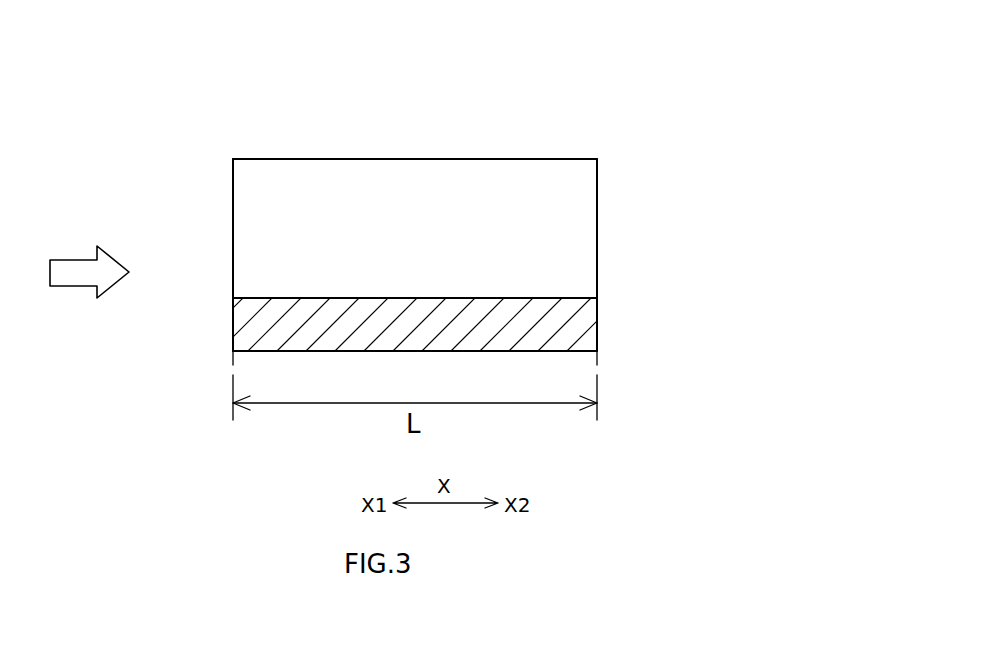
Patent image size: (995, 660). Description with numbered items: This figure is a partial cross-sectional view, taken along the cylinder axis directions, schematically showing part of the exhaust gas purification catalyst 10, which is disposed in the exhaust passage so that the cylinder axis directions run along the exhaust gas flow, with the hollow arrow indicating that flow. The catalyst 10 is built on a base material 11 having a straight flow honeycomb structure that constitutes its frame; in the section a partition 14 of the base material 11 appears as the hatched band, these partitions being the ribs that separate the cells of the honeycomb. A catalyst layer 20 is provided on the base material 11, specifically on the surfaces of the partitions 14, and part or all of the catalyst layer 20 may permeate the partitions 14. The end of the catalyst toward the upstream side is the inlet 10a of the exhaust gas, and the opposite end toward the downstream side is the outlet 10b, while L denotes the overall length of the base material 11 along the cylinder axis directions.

The exhaust gas purification catalyst 10 is at (626, 83).
The catalyst layer 20 is at (575, 203).
The partition 14 is at (466, 321).
The base material 11 is at (580, 328).
The inlet 10a is at (233, 313).
The outlet 10b is at (597, 308).